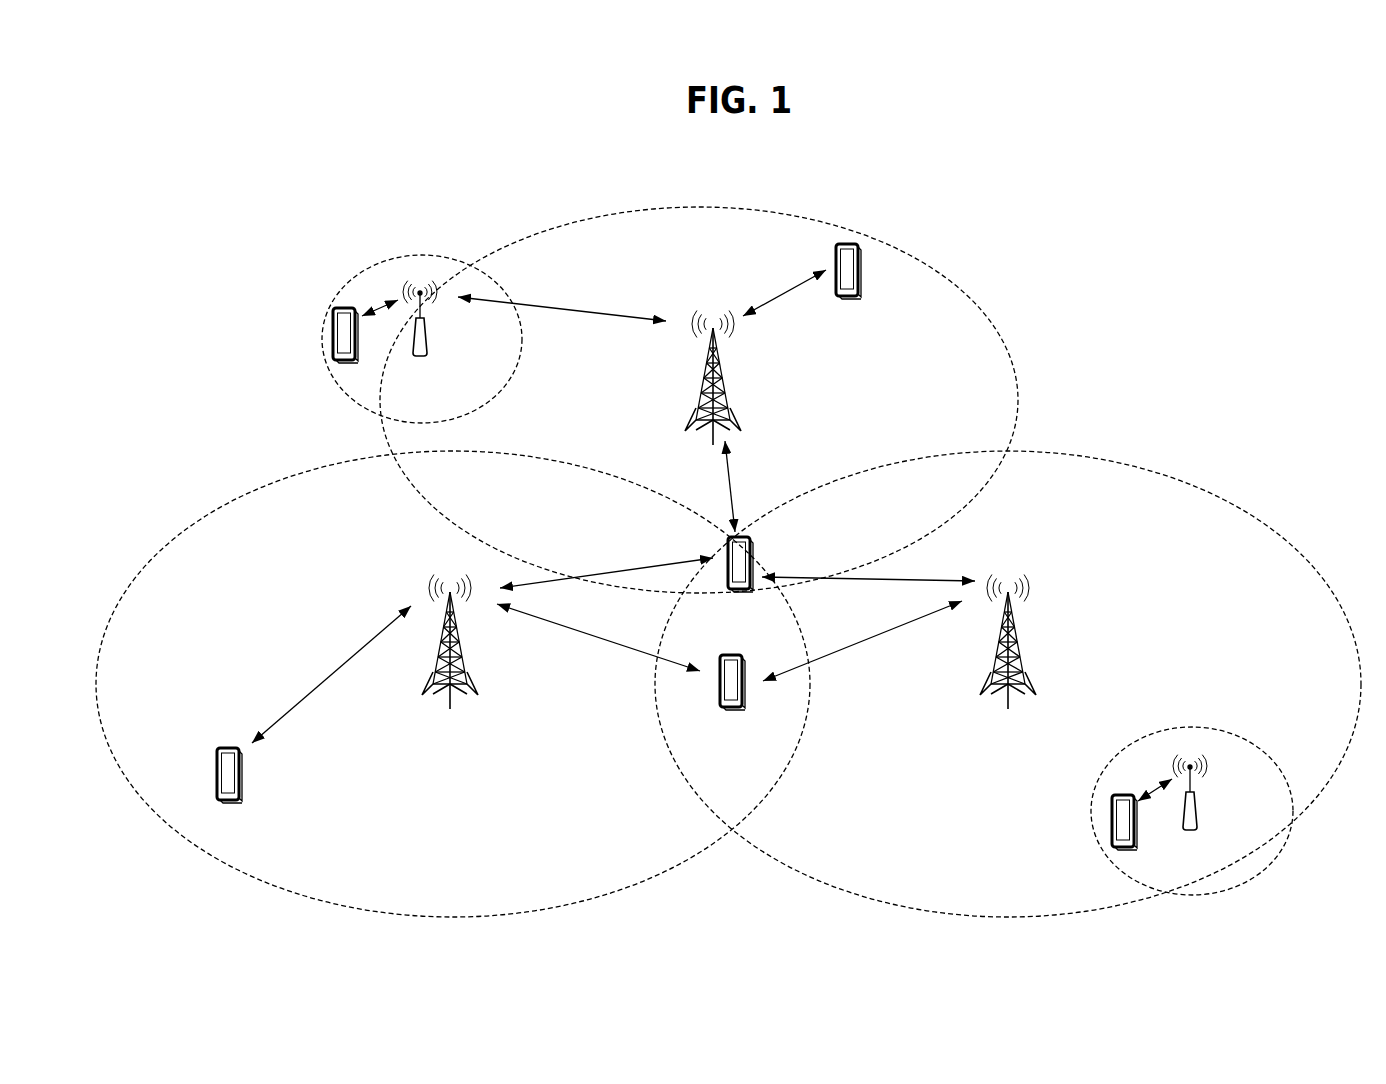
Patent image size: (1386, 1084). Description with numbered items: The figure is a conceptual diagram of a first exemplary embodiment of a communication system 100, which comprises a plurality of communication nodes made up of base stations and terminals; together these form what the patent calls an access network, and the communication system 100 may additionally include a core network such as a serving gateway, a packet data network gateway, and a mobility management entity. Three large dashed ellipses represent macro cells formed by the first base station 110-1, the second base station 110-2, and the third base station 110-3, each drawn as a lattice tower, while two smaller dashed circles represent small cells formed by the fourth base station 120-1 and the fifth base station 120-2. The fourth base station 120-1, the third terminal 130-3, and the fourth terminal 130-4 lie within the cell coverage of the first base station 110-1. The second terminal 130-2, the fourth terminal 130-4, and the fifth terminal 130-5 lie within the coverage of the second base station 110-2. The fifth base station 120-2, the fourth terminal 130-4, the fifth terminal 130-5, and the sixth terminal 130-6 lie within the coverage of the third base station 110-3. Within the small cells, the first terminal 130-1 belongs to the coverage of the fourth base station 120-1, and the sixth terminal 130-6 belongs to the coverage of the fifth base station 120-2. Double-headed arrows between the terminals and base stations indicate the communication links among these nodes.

The communication system 100 is at (720, 170).
The first base station 110-1 is at (730, 380).
The second base station 110-2 is at (450, 709).
The third base station 110-3 is at (1024, 643).
The fourth base station 120-1 is at (428, 338).
The fifth base station 120-2 is at (1198, 802).
The first terminal 130-1 is at (333, 330).
The second terminal 130-2 is at (243, 775).
The third terminal 130-3 is at (862, 275).
The fourth terminal 130-4 is at (753, 543).
The fifth terminal 130-5 is at (738, 656).
The sixth terminal 130-6 is at (1112, 820).